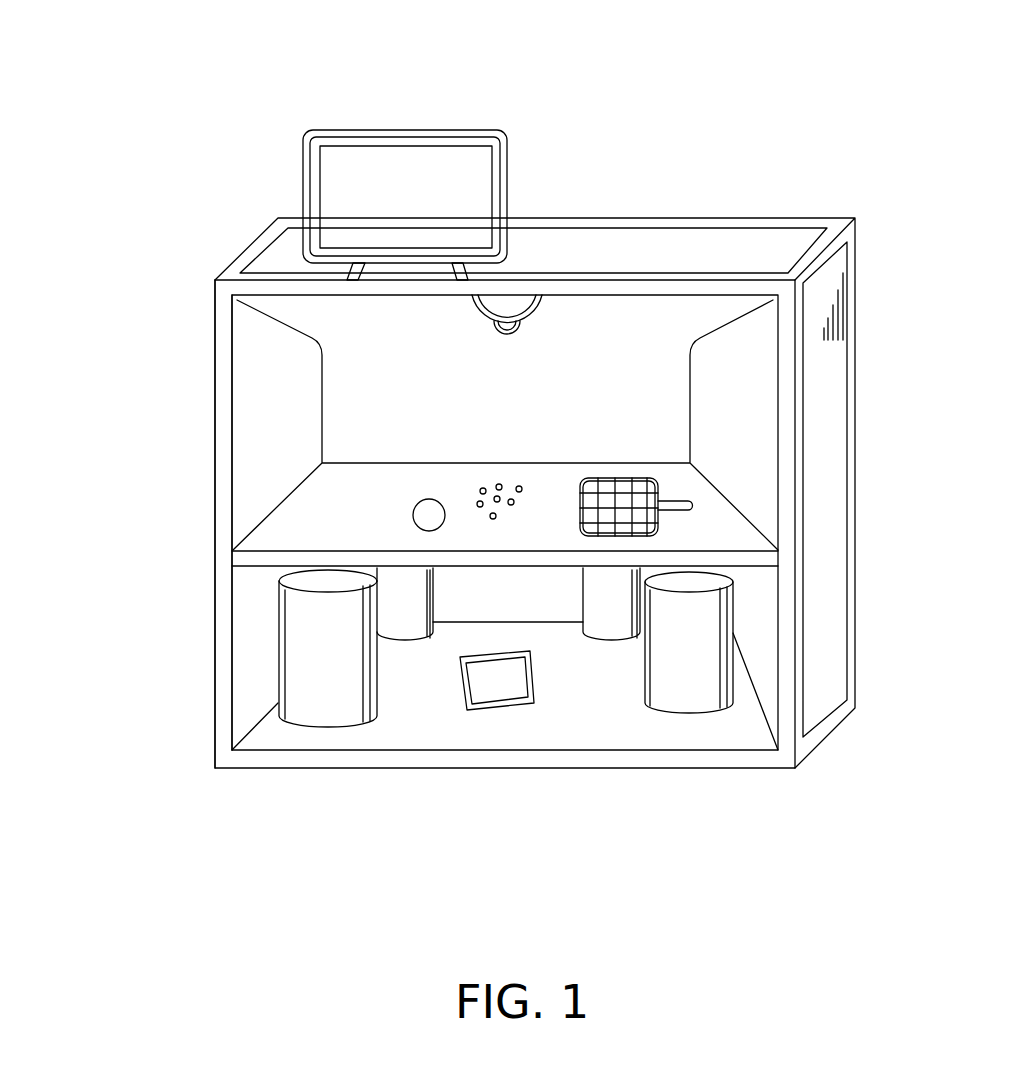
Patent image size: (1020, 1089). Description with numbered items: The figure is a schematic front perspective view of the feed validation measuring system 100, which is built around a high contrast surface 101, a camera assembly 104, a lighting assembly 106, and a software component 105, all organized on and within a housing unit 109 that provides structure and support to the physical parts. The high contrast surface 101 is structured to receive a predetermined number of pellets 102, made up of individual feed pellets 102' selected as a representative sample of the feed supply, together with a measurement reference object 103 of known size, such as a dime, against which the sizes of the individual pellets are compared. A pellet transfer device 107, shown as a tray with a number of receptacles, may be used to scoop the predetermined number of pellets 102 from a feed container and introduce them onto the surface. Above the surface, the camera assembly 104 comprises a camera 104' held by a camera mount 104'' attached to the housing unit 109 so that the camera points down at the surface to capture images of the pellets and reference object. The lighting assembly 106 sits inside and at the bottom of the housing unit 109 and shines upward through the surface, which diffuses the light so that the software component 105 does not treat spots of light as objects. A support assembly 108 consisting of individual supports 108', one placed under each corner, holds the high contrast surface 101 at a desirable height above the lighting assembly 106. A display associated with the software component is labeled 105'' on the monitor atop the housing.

The feed validation measuring system 100 is at (170, 208).
The high contrast surface 101 is at (713, 530).
The predetermined number of pellets 102 is at (540, 427).
The individual feed pellets 102' is at (629, 449).
The measurement reference object 103 is at (427, 502).
The camera assembly 104 is at (473, 369).
The camera 104' is at (439, 358).
The camera mount 104'' is at (434, 318).
The software component 105 is at (406, 139).
The display frame 105'' is at (494, 205).
The lighting assembly 106 is at (505, 685).
The pellet transfer device 107 is at (662, 478).
The support assembly 108 is at (283, 711).
The individual supports 108' is at (429, 732).
The housing unit 109 is at (215, 515).